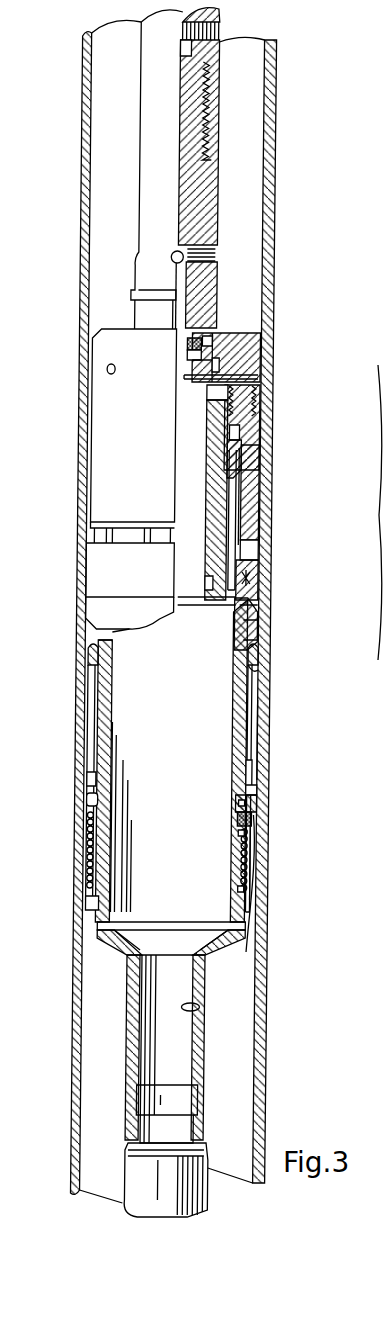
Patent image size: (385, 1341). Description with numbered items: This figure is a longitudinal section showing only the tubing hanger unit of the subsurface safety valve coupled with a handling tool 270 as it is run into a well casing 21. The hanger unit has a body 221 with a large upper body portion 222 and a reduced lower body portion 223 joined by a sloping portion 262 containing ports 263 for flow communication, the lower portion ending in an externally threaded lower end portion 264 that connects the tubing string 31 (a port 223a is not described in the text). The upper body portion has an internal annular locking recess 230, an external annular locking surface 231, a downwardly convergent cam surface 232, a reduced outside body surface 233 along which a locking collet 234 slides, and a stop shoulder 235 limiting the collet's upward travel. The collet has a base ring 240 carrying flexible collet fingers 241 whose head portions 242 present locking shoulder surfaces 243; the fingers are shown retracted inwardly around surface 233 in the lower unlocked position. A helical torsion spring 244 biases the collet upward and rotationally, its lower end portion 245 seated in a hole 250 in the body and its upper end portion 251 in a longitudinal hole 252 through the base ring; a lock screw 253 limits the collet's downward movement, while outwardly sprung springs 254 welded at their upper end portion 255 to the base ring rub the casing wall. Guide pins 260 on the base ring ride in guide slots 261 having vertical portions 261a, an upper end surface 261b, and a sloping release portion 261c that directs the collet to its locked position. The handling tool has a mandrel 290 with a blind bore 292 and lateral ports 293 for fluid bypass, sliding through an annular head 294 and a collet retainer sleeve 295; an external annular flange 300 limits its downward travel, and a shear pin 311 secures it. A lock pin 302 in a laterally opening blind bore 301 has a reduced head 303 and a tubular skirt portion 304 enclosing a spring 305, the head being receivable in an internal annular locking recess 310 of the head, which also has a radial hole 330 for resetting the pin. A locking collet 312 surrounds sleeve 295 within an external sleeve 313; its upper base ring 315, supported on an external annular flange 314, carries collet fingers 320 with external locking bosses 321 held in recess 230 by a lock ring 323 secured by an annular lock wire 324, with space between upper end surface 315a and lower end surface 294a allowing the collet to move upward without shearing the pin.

The well casing 21 is at (277, 62).
The tubing string 31 is at (214, 1205).
The body 221 is at (232, 705).
The upper body portion 222 is at (239, 713).
The lower body portion 223 is at (207, 1050).
The port 223a is at (210, 1007).
The internal annular locking recess 230 is at (252, 600).
The external annular locking surface 231 is at (260, 620).
The external annular cam surface 232 is at (263, 640).
The reduced diameter outside body surface 233 is at (260, 718).
The locking collet 234 is at (265, 738).
The external annular stop shoulder 235 is at (263, 607).
The base ring 240 is at (262, 787).
The collet fingers 241 is at (261, 768).
The head portion 242 is at (264, 654).
The locking shoulder surface 243 is at (262, 669).
The helical torsion spring 244 is at (260, 862).
The lower end portion 245 is at (108, 904).
The hole 250 is at (97, 896).
The upper end portion 251 is at (102, 779).
The longitudinal hole 252 is at (104, 800).
The lock screw 253 is at (102, 840).
The springs 254 is at (257, 847).
The upper end portion 255 is at (259, 820).
The guide pins 260 is at (264, 804).
The guide slots 261 is at (260, 900).
The vertical portions 261a is at (249, 890).
The upper end surface 261b is at (247, 805).
The sloping release portion 261c is at (249, 835).
The sloping portion 262 is at (121, 950).
The ports 263 is at (235, 946).
The externally threaded lower end portion 264 is at (208, 1130).
The handling tool 270 is at (120, 279).
The mandrel 290 is at (220, 192).
The blind bore 292 is at (188, 447).
The lateral ports 293 is at (216, 263).
The annular head 294 is at (266, 341).
The lower end surface 294a is at (263, 422).
The collet retainer sleeve 295 is at (213, 398).
The external annular flange 300 is at (216, 303).
The laterally opening blind bore 301 is at (178, 333).
The lock pin 302 is at (214, 340).
The reduced head 303 is at (222, 344).
The tubular skirt portion 304 is at (194, 347).
The spring 305 is at (196, 356).
The internal annular locking recess 310 is at (225, 366).
The shear pin 311 is at (262, 380).
The locking collet 312 is at (254, 501).
The external sleeve 313 is at (255, 513).
The external annular flange 314 is at (242, 482).
The upper base ring 315 is at (244, 461).
The upper end surface 315a is at (247, 433).
The collet fingers 320 is at (250, 535).
The external locking boss 321 is at (257, 576).
The lock ring 323 is at (224, 601).
The annular lock wire 324 is at (211, 583).
The radial hole 330 is at (130, 479).